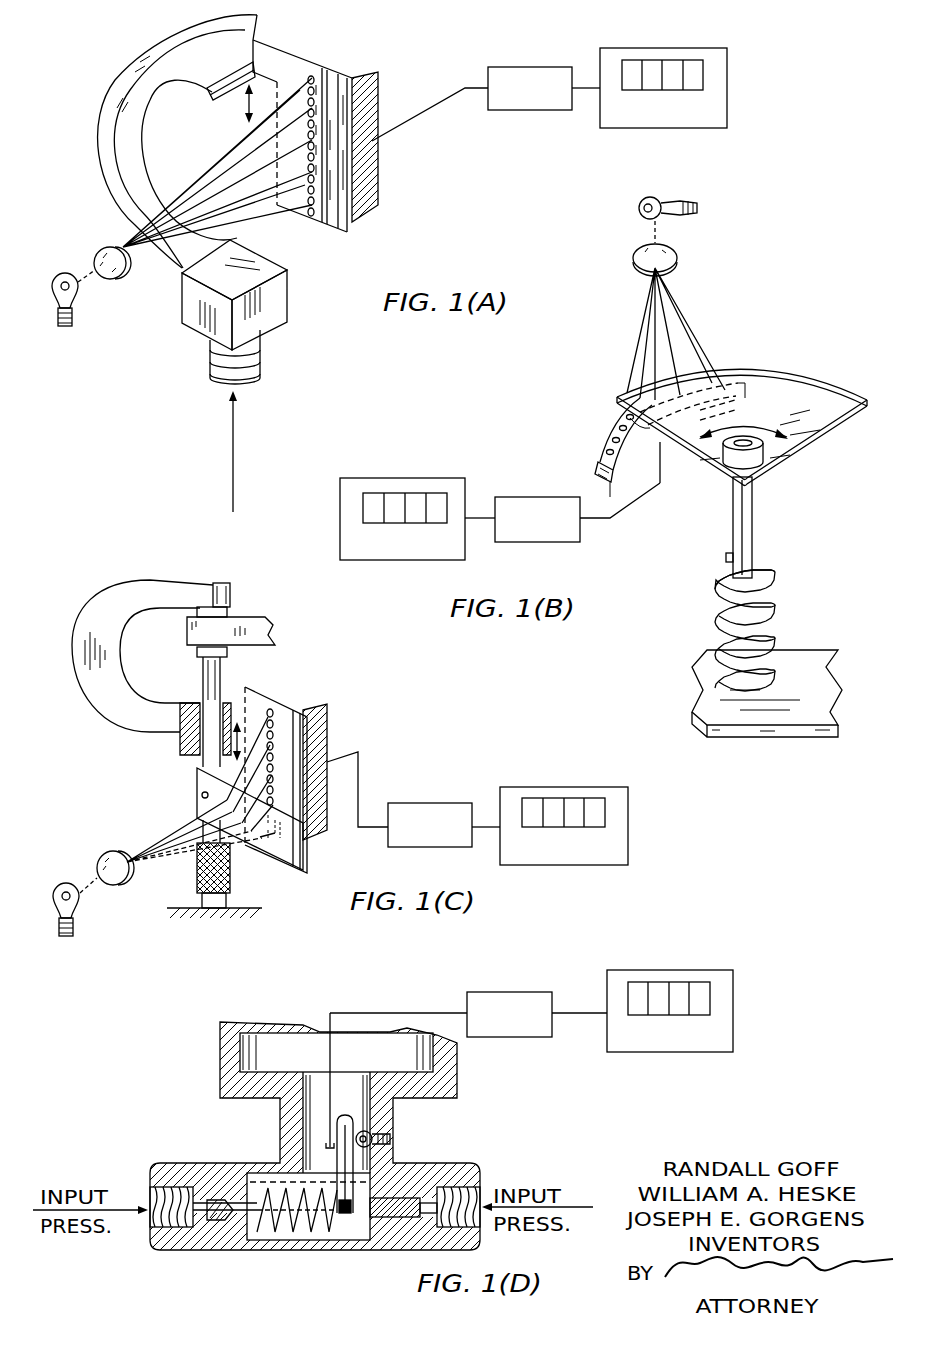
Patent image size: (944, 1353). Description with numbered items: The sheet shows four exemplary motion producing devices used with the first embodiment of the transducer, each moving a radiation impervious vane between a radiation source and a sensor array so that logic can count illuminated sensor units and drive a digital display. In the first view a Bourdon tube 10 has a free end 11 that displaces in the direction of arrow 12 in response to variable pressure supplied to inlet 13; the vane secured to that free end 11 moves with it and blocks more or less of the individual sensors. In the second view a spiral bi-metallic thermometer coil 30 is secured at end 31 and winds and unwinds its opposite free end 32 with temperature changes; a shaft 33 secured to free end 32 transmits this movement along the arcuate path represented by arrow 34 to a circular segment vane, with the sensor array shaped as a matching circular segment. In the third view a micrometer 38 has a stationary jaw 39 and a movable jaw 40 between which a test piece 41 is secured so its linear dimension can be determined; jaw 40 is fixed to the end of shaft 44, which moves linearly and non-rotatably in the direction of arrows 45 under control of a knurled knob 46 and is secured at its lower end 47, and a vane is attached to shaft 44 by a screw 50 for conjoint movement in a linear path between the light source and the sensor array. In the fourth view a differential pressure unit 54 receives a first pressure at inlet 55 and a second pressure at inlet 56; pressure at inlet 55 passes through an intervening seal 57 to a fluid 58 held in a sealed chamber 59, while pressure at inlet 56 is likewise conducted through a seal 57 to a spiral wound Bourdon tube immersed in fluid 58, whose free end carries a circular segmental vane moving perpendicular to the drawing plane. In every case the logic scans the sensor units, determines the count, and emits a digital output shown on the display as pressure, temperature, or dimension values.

The Bourdon tube 10 is at (156, 141).
The free end 11 is at (241, 55).
The arrow 12 is at (218, 106).
The inlet 13 is at (244, 376).
The bi-metallic thermometer coil 30 is at (778, 630).
The secured end 31 is at (767, 693).
The free end 32 is at (768, 559).
The shaft 33 is at (773, 527).
The arrow 34 is at (743, 424).
The micrometer 38 is at (142, 637).
The stationary jaw 39 is at (224, 575).
The movable jaw 40 is at (190, 644).
The test piece 41 is at (261, 625).
The shaft 44 is at (239, 706).
The arrows 45 is at (206, 743).
The knurled knob 46 is at (216, 858).
The lower end 47 is at (214, 926).
The screw 50 is at (208, 819).
The differential pressure unit 54 is at (360, 1136).
The inlet 55 is at (443, 1189).
The inlet 56 is at (154, 1232).
The seal 57 is at (218, 1248).
The fluid 58 is at (297, 1242).
The sealed chamber 59 is at (353, 1248).